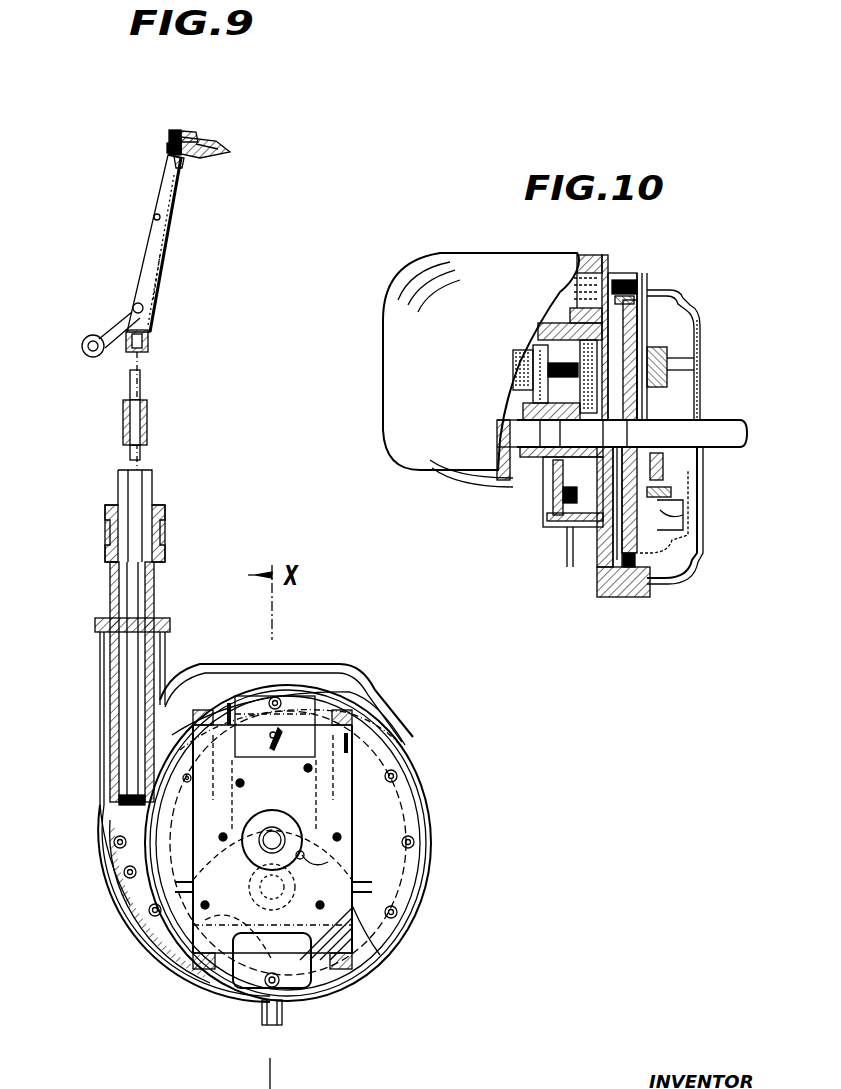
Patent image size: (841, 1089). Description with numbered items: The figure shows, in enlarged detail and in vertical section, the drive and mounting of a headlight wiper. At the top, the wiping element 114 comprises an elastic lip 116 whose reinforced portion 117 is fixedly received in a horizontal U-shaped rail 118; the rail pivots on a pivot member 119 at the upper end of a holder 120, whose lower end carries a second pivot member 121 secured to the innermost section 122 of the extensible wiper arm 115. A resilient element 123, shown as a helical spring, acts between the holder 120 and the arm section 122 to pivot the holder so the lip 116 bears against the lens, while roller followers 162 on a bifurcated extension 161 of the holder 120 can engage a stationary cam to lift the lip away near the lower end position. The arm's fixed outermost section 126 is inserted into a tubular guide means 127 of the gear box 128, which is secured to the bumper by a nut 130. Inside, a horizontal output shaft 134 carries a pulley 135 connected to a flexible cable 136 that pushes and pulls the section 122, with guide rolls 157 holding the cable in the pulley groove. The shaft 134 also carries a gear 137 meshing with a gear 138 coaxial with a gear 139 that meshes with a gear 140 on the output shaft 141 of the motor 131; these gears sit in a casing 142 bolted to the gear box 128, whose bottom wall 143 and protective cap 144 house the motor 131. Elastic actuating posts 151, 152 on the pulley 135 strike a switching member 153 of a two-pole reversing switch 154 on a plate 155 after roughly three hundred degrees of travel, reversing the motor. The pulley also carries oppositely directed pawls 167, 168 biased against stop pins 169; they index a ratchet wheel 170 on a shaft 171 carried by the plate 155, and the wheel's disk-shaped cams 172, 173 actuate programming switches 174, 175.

In FIG. 9, the wiping element 114 is at (168, 128).
In FIG. 9, the wiper arm 115 is at (149, 436).
In FIG. 9, the elastic lip 116 is at (224, 150).
In FIG. 9, the reinforced portion 117 is at (194, 136).
In FIG. 9, the rail 118 is at (167, 146).
In FIG. 9, the pivot member 119 is at (181, 162).
In FIG. 9, the holder 120 is at (162, 188).
In FIG. 9, the second pivot member 121 is at (131, 307).
In FIG. 9, the innermost section 122 is at (148, 346).
In FIG. 9, the resilient element 123 is at (160, 292).
In FIG. 9, the outermost section 126 is at (102, 592).
In FIG. 9, the tubular guide means 127 is at (92, 702).
In FIG. 9, the gear box 128 is at (130, 903).
In FIG. 10, the gear box 128 is at (597, 588).
In FIG. 9, the nut 130 is at (160, 535).
In FIG. 9, the motor 131 is at (286, 689).
In FIG. 10, the motor 131 is at (382, 405).
In FIG. 9, the output shaft 134 is at (272, 828).
In FIG. 10, the output shaft 134 is at (732, 408).
In FIG. 9, the pulley 135 is at (158, 940).
In FIG. 10, the pulley 135 is at (672, 562).
In FIG. 9, the flexible driving member 136 is at (92, 779).
In FIG. 10, the flexible driving member 136 is at (652, 292).
In FIG. 10, the gear 137 is at (545, 503).
In FIG. 10, the gear 138 is at (533, 390).
In FIG. 10, the gear 139 is at (572, 295).
In FIG. 10, the gear 140 is at (606, 262).
In FIG. 10, the motor output shaft 141 is at (540, 330).
In FIG. 10, the casing 142 is at (547, 525).
In FIG. 10, the bottom wall 143 is at (497, 450).
In FIG. 10, the protective shield or cap 144 is at (512, 490).
In FIG. 9, the actuating post 151 is at (272, 732).
In FIG. 10, the actuating post 151 is at (680, 305).
In FIG. 9, the actuating post 152 is at (193, 805).
In FIG. 9, the switching member 153 is at (278, 730).
In FIG. 9, the reversing switch 154 is at (360, 748).
In FIG. 10, the reversing switch 154 is at (680, 375).
In FIG. 9, the plate 155 is at (382, 711).
In FIG. 10, the plate 155 is at (702, 340).
In FIG. 9, the guide rolls 157 is at (114, 845).
In FIG. 10, the guide rolls 157 is at (641, 282).
In FIG. 9, the bifurcated extension 161 is at (110, 323).
In FIG. 9, the roller followers 162 is at (82, 347).
In FIG. 9, the pawl 167 is at (318, 840).
In FIG. 9, the pawl 168 is at (284, 985).
In FIG. 9, the stop pins 169 is at (270, 836).
In FIG. 9, the indexible wheel 170 is at (292, 898).
In FIG. 10, the indexible wheel 170 is at (688, 541).
In FIG. 10, the shaft 171 is at (690, 476).
In FIG. 10, the disk-shaped cam 172 is at (686, 512).
In FIG. 10, the disk-shaped cam 173 is at (688, 488).
In FIG. 9, the programming switch 174 is at (202, 985).
In FIG. 9, the programming switch 175 is at (396, 940).